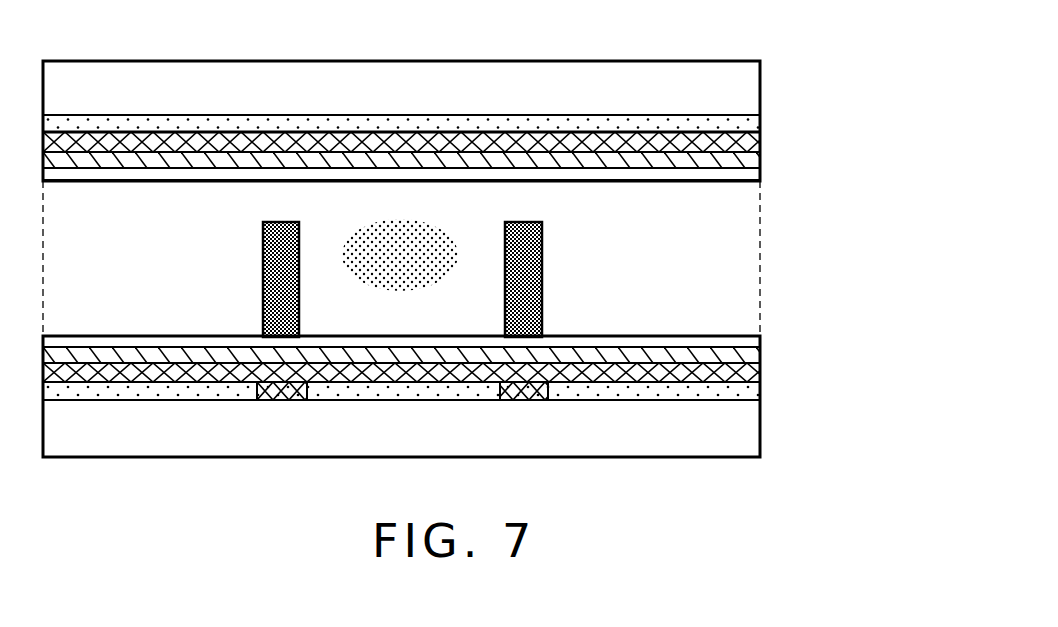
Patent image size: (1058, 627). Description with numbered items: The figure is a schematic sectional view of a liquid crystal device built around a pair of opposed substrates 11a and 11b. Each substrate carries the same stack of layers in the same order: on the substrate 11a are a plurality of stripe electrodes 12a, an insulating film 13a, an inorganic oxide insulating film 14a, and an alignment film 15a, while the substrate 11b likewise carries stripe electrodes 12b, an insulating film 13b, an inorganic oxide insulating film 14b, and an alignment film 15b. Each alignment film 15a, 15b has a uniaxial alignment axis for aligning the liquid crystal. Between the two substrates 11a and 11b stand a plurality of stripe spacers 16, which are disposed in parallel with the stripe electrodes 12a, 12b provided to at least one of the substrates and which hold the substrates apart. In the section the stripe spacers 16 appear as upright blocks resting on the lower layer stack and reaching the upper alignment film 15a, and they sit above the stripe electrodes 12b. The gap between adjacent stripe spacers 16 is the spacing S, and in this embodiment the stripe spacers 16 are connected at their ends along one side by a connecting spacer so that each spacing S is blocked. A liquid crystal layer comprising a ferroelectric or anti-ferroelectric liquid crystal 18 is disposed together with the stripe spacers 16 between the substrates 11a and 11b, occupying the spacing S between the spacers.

The substrate 11a is at (760, 84).
The stripe electrodes 12a is at (761, 120).
The insulating film 13a is at (760, 143).
The inorganic oxide insulating film 14a is at (761, 160).
The alignment film 15a is at (762, 179).
The substrate 11b is at (762, 430).
The stripe electrodes 12b is at (761, 394).
The insulating film 13b is at (760, 375).
The inorganic oxide insulating film 14b is at (761, 352).
The alignment film 15b is at (762, 340).
The stripe spacers 16 is at (263, 283).
The ferroelectric or anti-ferroelectric liquid crystal 18 is at (368, 229).
The spacing S is at (447, 217).